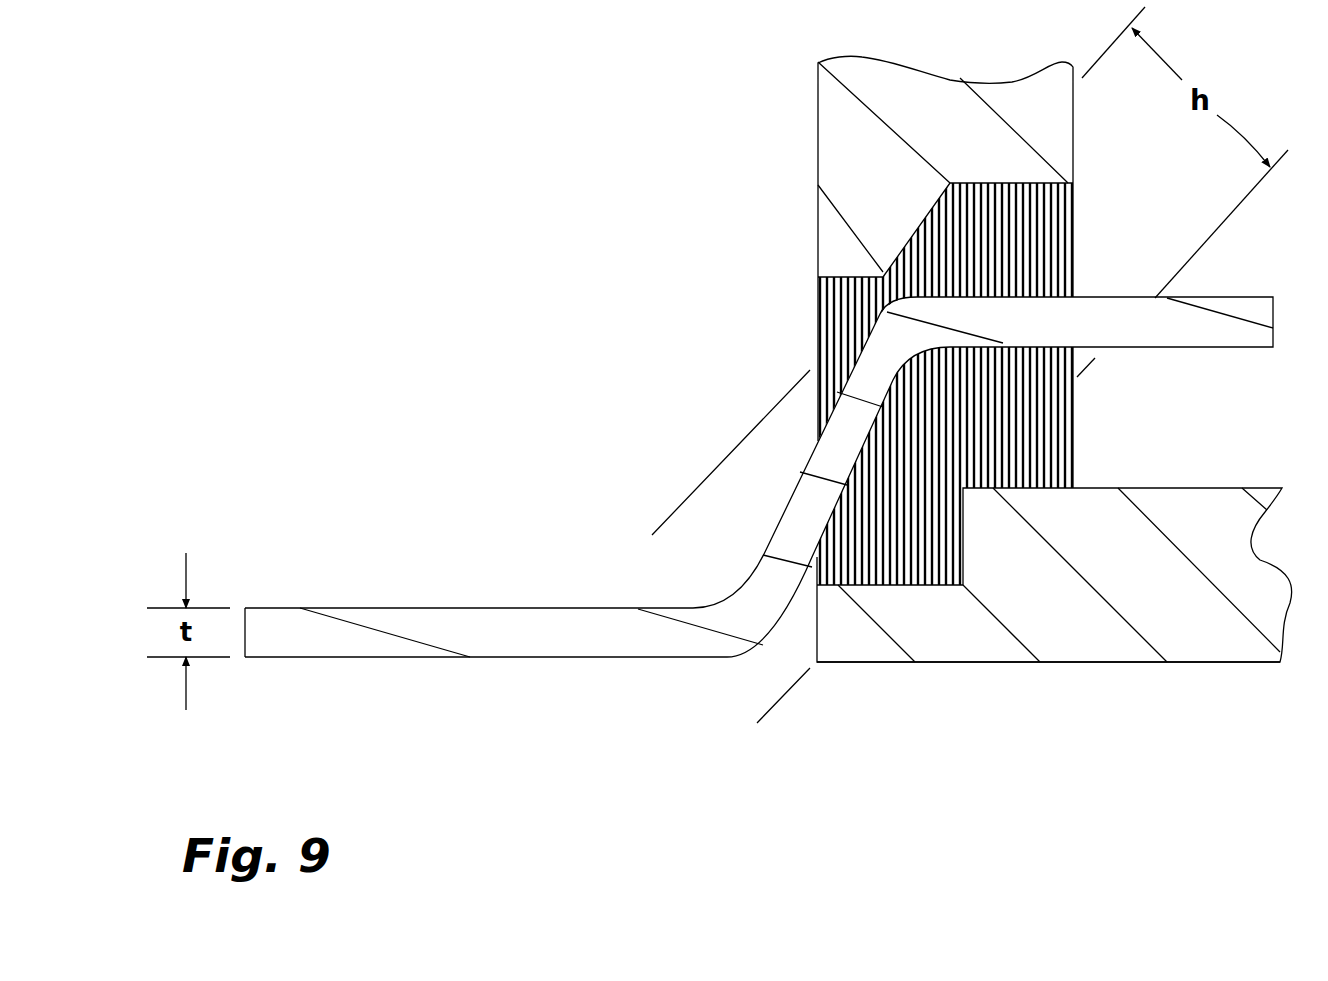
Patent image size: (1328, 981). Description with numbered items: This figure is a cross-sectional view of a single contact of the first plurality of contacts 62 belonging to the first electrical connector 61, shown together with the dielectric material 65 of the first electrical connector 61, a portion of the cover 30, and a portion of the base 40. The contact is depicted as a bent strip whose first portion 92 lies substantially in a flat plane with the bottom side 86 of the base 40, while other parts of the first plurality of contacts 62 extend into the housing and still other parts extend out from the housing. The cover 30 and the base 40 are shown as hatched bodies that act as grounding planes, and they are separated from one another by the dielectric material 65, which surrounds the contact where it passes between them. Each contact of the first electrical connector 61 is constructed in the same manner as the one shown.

The cover 30 is at (817, 83).
The base 40 is at (1177, 662).
The first electrical connector 61 is at (1073, 435).
The first plurality of contacts 62 is at (1218, 298).
The dielectric material 65 is at (818, 287).
The side 86 is at (1257, 662).
The first portion 92 is at (350, 657).